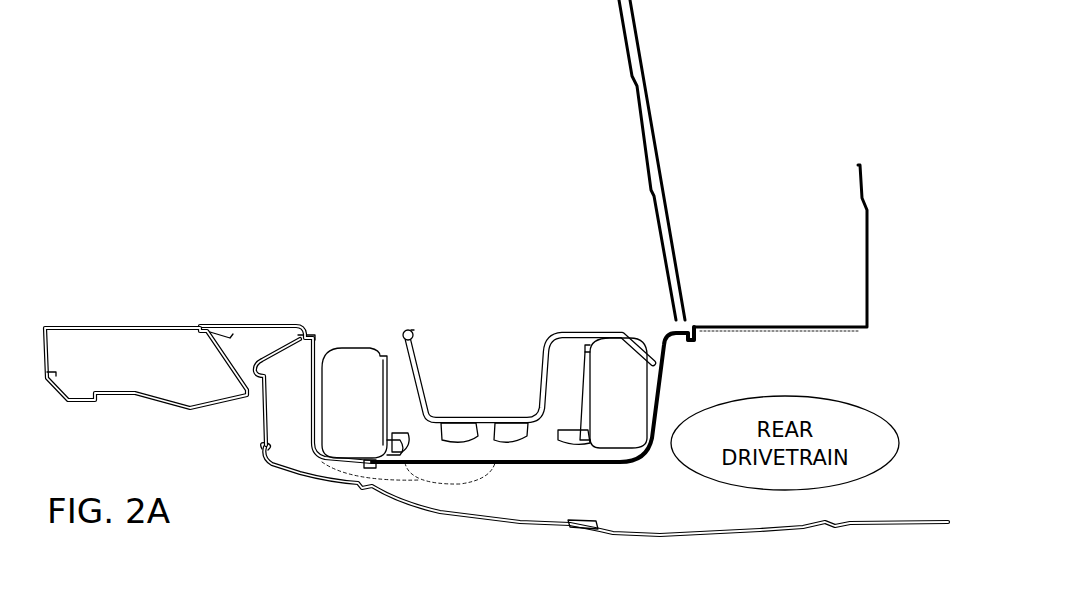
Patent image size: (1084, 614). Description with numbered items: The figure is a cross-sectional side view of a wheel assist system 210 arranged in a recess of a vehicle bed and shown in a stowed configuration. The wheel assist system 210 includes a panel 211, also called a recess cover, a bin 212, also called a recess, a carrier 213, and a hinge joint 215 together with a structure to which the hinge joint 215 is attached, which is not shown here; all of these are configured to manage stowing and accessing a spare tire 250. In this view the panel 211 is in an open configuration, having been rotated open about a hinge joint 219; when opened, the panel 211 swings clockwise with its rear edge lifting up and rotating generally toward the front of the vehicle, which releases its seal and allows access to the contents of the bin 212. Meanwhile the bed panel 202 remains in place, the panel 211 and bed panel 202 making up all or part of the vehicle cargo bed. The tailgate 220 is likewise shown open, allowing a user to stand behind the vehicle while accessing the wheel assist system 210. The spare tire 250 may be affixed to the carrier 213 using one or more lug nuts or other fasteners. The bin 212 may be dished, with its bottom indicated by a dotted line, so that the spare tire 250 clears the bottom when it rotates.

The bed panel 202 is at (811, 326).
The wheel assist system 210 is at (461, 316).
The panel 211 is at (650, 100).
The bin 212 is at (412, 466).
The carrier 213 is at (621, 335).
The hinge joint 215 is at (405, 328).
The hinge joint 219 is at (700, 318).
The tailgate 220 is at (135, 323).
The spare tire 250 is at (330, 340).